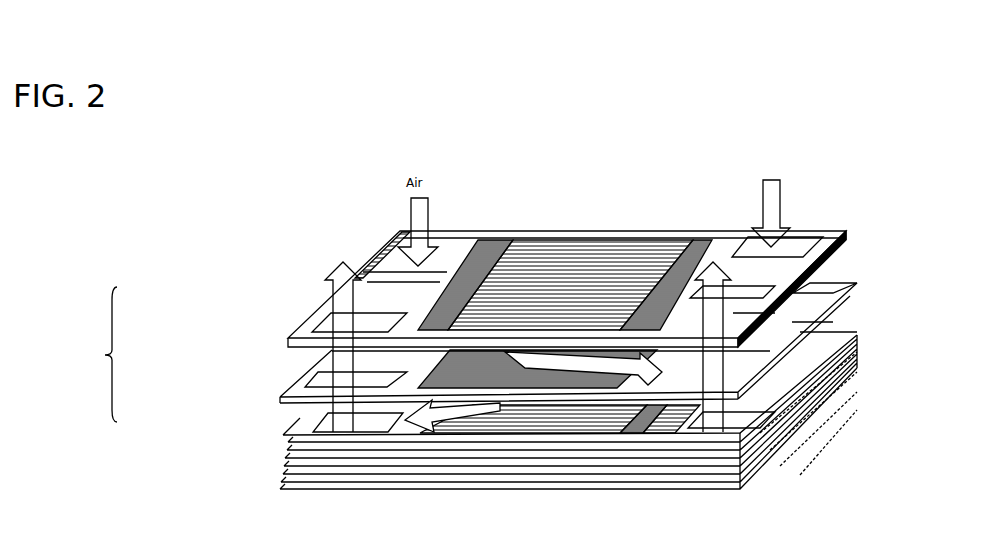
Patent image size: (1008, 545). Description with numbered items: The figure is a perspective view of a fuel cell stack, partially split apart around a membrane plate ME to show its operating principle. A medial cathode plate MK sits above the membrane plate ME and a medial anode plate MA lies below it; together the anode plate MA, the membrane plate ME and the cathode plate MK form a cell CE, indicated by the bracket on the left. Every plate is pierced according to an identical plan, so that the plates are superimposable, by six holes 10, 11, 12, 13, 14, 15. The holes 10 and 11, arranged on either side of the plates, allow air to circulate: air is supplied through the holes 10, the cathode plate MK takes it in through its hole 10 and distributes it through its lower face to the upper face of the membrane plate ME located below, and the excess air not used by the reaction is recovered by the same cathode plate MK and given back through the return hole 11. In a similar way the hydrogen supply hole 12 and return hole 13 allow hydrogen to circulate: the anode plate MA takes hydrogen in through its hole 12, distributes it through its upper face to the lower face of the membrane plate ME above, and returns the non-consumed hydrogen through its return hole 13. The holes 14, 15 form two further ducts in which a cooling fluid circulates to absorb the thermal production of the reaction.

The air supply hole 10 is at (567, 259).
The air return hole 11 is at (824, 311).
The hydrogen supply hole 12 is at (824, 208).
The hydrogen return hole 13 is at (480, 344).
The cooling fluid hole 14 is at (841, 267).
The cooling fluid hole 15 is at (360, 249).
The medial cathode plate MK is at (420, 285).
The membrane plate ME is at (492, 343).
The medial anode plate MA is at (492, 412).
The cell CE is at (84, 354).